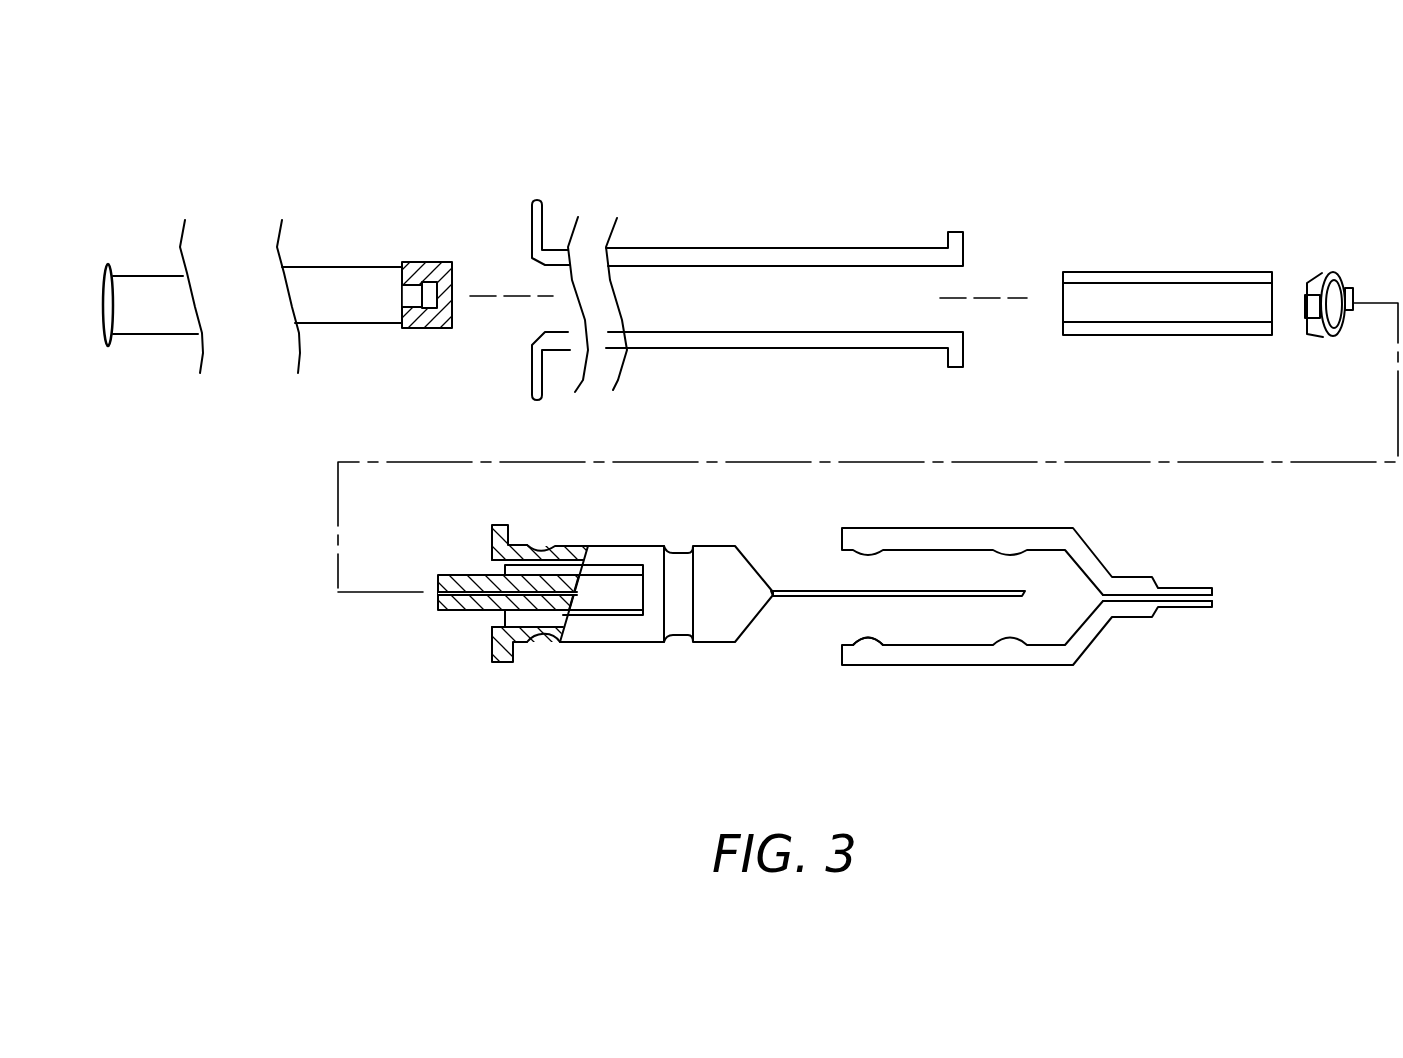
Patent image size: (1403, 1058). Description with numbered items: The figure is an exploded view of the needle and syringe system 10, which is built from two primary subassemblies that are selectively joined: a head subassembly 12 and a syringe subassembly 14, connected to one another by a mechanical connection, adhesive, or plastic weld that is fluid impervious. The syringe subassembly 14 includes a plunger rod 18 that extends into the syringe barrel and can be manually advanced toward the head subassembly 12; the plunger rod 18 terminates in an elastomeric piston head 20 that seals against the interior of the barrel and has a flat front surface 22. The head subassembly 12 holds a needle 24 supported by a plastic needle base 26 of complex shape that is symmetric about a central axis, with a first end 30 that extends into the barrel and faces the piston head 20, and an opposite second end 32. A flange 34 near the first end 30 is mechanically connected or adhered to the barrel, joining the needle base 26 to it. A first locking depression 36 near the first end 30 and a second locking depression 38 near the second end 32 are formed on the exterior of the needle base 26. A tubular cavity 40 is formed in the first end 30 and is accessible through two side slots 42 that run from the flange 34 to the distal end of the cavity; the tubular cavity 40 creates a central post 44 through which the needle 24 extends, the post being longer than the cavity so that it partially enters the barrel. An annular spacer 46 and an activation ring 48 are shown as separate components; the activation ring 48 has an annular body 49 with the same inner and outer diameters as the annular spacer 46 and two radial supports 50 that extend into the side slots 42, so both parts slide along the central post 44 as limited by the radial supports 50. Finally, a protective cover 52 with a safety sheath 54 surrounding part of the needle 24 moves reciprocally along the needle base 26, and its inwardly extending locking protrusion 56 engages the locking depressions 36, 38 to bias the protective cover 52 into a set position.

The needle and syringe system 10 is at (1131, 170).
The head subassembly 12 is at (410, 438).
The syringe subassembly 14 is at (903, 190).
The plunger rod 18 is at (356, 280).
The elastomeric piston head 20 is at (440, 310).
The flat front surface 22 is at (452, 275).
The needle 24 is at (797, 590).
The needle base 26 is at (623, 643).
The first end 30 is at (440, 607).
The second end 32 is at (770, 598).
The flange 34 is at (502, 660).
The first locking depression 36 is at (543, 543).
The second locking depression 38 is at (673, 555).
The tubular cavity 40 is at (518, 573).
The side slots 42 is at (620, 572).
The central post 44 is at (453, 578).
The annular spacer 46 is at (1207, 270).
The activation ring 48 is at (1320, 272).
The annular body 49 is at (1318, 338).
The radial supports 50 is at (1308, 310).
The protective cover 52 is at (1043, 653).
The safety sheath 54 is at (1193, 588).
The locking protrusion 56 is at (890, 637).